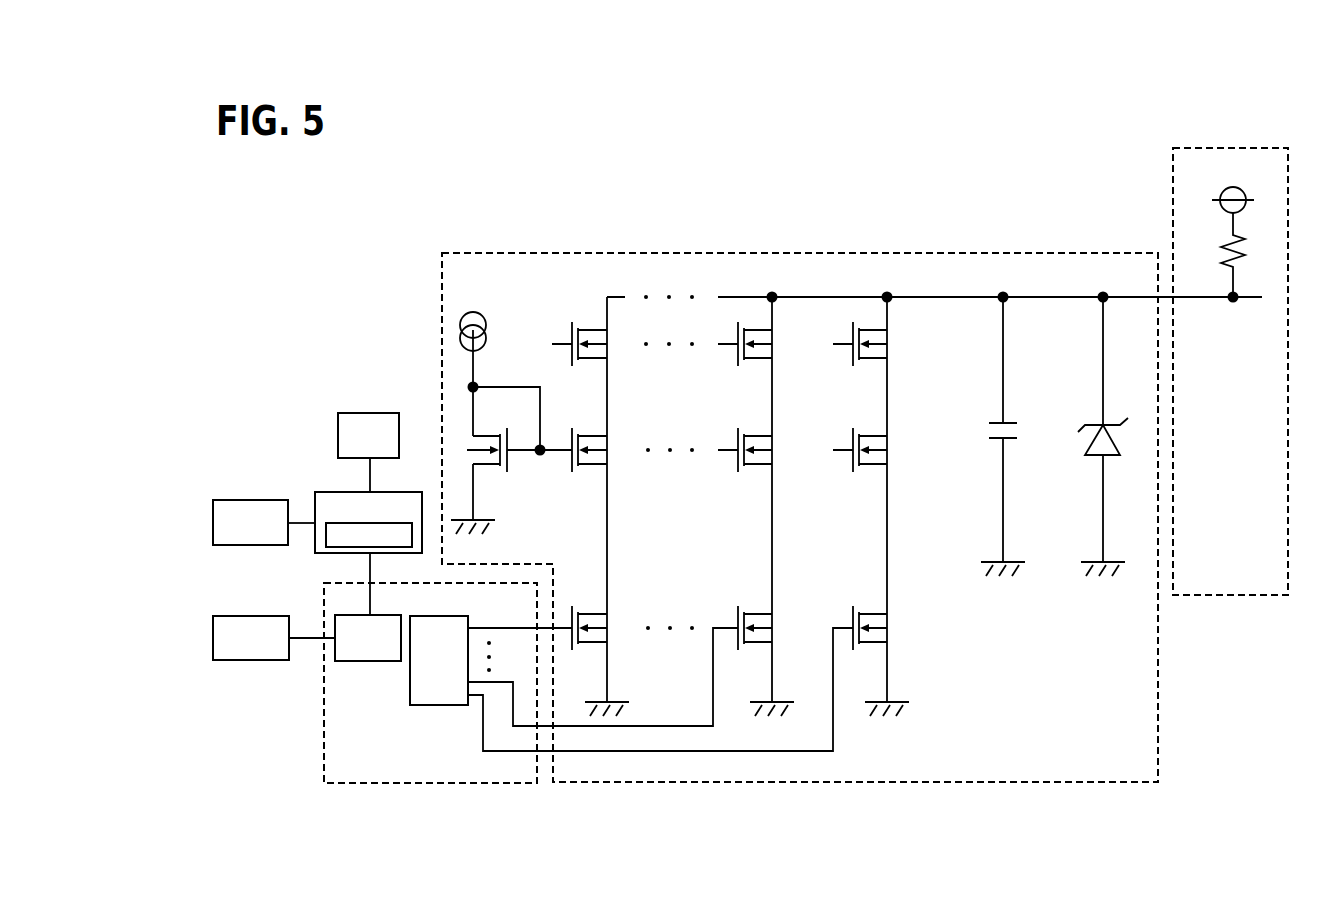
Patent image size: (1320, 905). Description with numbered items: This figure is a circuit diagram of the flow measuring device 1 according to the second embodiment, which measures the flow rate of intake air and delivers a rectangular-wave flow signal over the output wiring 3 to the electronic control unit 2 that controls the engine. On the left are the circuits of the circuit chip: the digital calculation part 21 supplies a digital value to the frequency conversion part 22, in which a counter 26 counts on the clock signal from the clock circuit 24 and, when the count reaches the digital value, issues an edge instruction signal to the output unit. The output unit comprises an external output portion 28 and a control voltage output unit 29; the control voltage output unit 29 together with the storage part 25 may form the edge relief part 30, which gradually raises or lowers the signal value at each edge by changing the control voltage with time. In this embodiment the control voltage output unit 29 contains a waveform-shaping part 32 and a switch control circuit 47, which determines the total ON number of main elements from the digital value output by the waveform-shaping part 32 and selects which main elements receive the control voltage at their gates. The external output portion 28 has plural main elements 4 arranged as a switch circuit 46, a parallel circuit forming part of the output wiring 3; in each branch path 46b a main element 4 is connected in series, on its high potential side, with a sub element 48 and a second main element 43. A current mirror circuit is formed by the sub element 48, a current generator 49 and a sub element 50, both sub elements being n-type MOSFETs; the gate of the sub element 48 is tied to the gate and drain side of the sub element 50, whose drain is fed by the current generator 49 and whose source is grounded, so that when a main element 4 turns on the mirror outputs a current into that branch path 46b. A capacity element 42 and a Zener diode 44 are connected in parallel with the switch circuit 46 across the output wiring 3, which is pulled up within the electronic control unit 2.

The flow measuring device 1 is at (280, 243).
The electronic control unit (ECU) 2 is at (1168, 182).
The output wiring 3 is at (1130, 296).
The main element 4 is at (612, 620).
The digital calculation part 21 is at (246, 500).
The frequency conversion part 22 is at (327, 492).
The clock circuit 24 is at (370, 413).
The storage part 25 is at (233, 661).
The counter 26 is at (412, 535).
The external output portion 28 is at (986, 250).
The control voltage output unit 29 is at (449, 788).
The edge relief part 30 is at (378, 788).
The waveform-shaping part 32 is at (370, 662).
The capacity element 42 is at (995, 422).
The second main element 43 is at (609, 338).
The Zener diode 44 is at (1095, 422).
The switch circuit 46 is at (902, 720).
The branch path 46b is at (609, 289).
The switch control circuit 47 is at (445, 705).
The sub element 48 is at (608, 444).
The current generator 49 is at (473, 312).
The sub element 50 is at (476, 446).